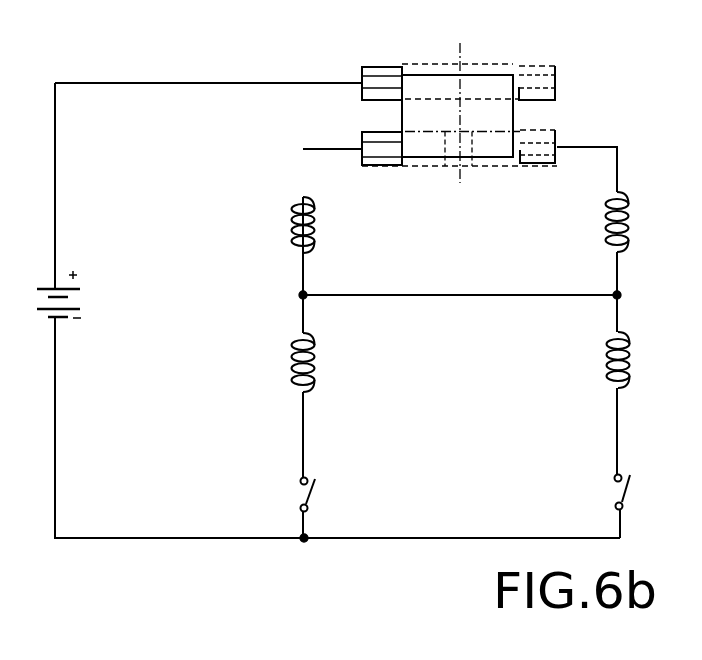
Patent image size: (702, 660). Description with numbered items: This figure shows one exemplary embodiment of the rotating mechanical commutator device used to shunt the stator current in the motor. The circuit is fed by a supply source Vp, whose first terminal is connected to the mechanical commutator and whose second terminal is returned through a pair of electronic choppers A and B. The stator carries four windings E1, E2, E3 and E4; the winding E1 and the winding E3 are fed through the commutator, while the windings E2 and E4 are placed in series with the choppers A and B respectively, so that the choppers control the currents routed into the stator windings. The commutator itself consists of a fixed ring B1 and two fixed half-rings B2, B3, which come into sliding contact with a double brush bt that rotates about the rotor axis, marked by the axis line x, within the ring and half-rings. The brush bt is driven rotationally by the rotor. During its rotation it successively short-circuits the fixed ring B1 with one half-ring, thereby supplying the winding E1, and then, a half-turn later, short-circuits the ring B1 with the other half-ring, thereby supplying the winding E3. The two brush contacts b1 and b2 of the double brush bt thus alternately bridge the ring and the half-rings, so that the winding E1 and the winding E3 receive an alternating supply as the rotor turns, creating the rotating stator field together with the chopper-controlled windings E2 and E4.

The supply source Vp is at (76, 296).
The stator winding E1 is at (319, 225).
The stator winding E2 is at (322, 362).
The stator winding E3 is at (634, 222).
The stator winding E4 is at (635, 360).
The electronic chopper A is at (319, 496).
The electronic chopper B is at (633, 492).
The double brush bt is at (432, 92).
The axis x- x is at (468, 112).
The first contact terminal b1 is at (375, 84).
The second contact terminal b2 is at (375, 149).
The fixed ring B1 is at (540, 66).
The fixed half-ring B2 is at (397, 166).
The fixed half-ring B3 is at (533, 166).